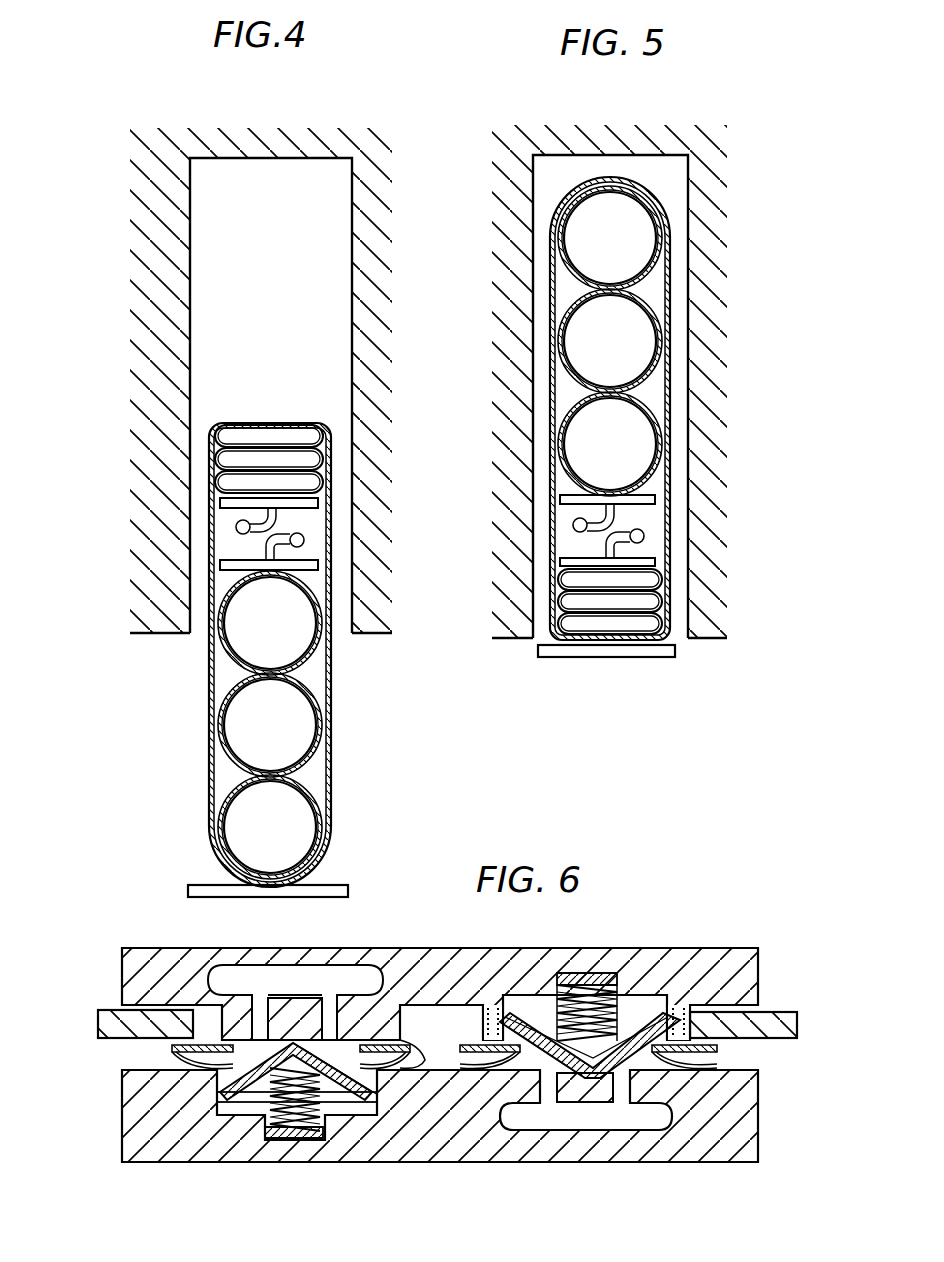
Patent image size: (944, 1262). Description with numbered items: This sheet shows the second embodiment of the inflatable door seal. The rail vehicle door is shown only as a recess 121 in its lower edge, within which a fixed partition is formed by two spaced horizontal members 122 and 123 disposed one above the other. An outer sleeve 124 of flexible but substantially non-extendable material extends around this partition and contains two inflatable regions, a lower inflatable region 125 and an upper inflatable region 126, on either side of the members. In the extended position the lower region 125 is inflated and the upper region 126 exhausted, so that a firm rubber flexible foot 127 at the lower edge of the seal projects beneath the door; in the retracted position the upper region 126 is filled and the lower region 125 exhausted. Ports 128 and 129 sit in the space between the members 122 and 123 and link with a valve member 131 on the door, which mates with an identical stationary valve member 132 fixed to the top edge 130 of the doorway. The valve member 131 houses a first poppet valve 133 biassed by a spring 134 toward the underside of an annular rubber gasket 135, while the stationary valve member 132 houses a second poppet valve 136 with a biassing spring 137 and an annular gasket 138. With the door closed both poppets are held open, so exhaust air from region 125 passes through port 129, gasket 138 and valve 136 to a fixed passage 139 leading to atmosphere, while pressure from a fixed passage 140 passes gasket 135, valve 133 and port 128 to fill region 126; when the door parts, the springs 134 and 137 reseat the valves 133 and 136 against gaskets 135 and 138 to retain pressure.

In FIG. 4, the recess 121 is at (212, 251).
In FIG. 5, the recess 121 is at (548, 186).
In FIG. 4, the upper horizontal member 122 is at (218, 503).
In FIG. 5, the upper horizontal member 122 is at (584, 496).
In FIG. 4, the lower horizontal member 123 is at (220, 564).
In FIG. 5, the lower horizontal member 123 is at (600, 558).
In FIG. 4, the outer sleeve 124 is at (334, 755).
In FIG. 5, the outer sleeve 124 is at (553, 630).
In FIG. 4, the lower inflatable region 125 is at (250, 731).
In FIG. 5, the lower inflatable region 125 is at (570, 582).
In FIG. 4, the upper inflatable region 126 is at (287, 450).
In FIG. 5, the upper inflatable region 126 is at (632, 250).
In FIG. 4, the flexible foot 127 is at (340, 885).
In FIG. 5, the flexible foot 127 is at (615, 657).
In FIG. 4, the port 128 is at (236, 526).
In FIG. 5, the port 128 is at (573, 526).
In FIG. 6, the port 128 is at (238, 1108).
In FIG. 4, the port 129 is at (304, 538).
In FIG. 5, the port 129 is at (645, 532).
In FIG. 6, the port 129 is at (587, 1101).
In FIG. 6, the top edge of the doorway 130 is at (103, 1010).
In FIG. 6, the valve member 131 is at (440, 1125).
In FIG. 6, the valve member 132 is at (417, 958).
In FIG. 6, the first poppet valve 133 is at (368, 1108).
In FIG. 6, the spring 134 is at (315, 1140).
In FIG. 6, the annular rubber gasket 135 is at (172, 1055).
In FIG. 6, the second poppet valve 136 is at (662, 1012).
In FIG. 6, the biassing spring 137 is at (582, 972).
In FIG. 6, the annular gasket 138 is at (705, 1056).
In FIG. 6, the fixed passage 139 is at (512, 1000).
In FIG. 6, the fixed passage 140 is at (295, 1002).